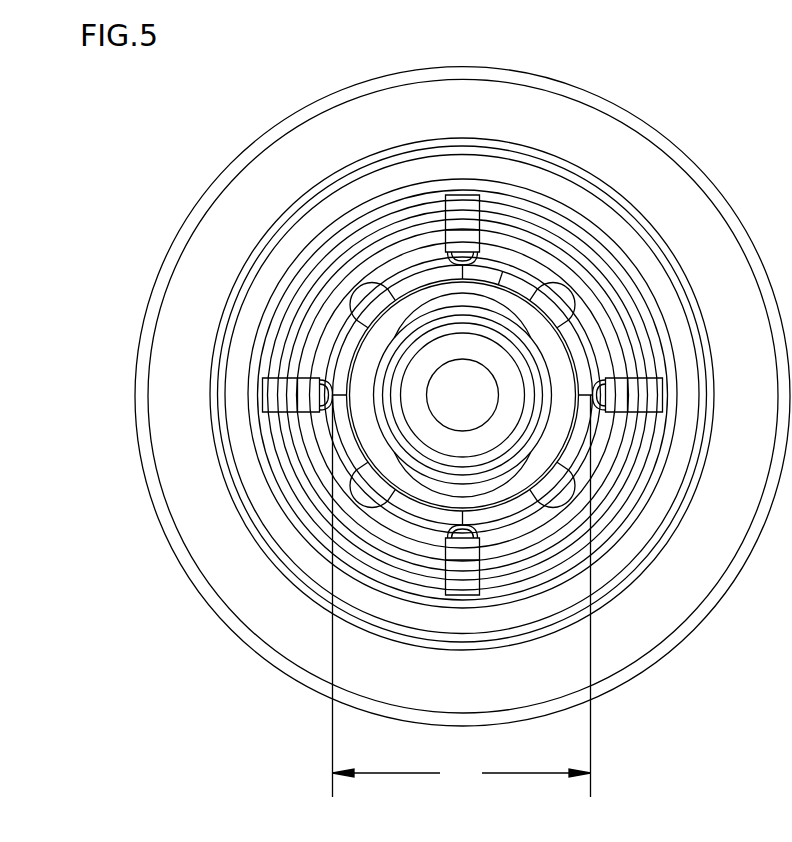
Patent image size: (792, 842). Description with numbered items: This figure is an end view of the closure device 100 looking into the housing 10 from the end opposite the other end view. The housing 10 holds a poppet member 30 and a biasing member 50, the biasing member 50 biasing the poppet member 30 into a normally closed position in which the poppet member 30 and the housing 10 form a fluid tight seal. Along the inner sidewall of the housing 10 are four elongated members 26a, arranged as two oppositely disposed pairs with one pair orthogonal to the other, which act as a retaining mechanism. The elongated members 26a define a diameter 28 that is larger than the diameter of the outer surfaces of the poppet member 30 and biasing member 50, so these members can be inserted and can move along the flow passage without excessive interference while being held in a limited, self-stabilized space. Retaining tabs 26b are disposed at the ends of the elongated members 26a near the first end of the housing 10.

The housing 10 is at (133, 389).
The closure device 100 is at (213, 138).
The biasing member 50 is at (343, 347).
The poppet member 30 is at (381, 283).
The elongated members 26a is at (478, 202).
The retaining tabs 26b is at (482, 242).
The diameter 28 is at (462, 596).